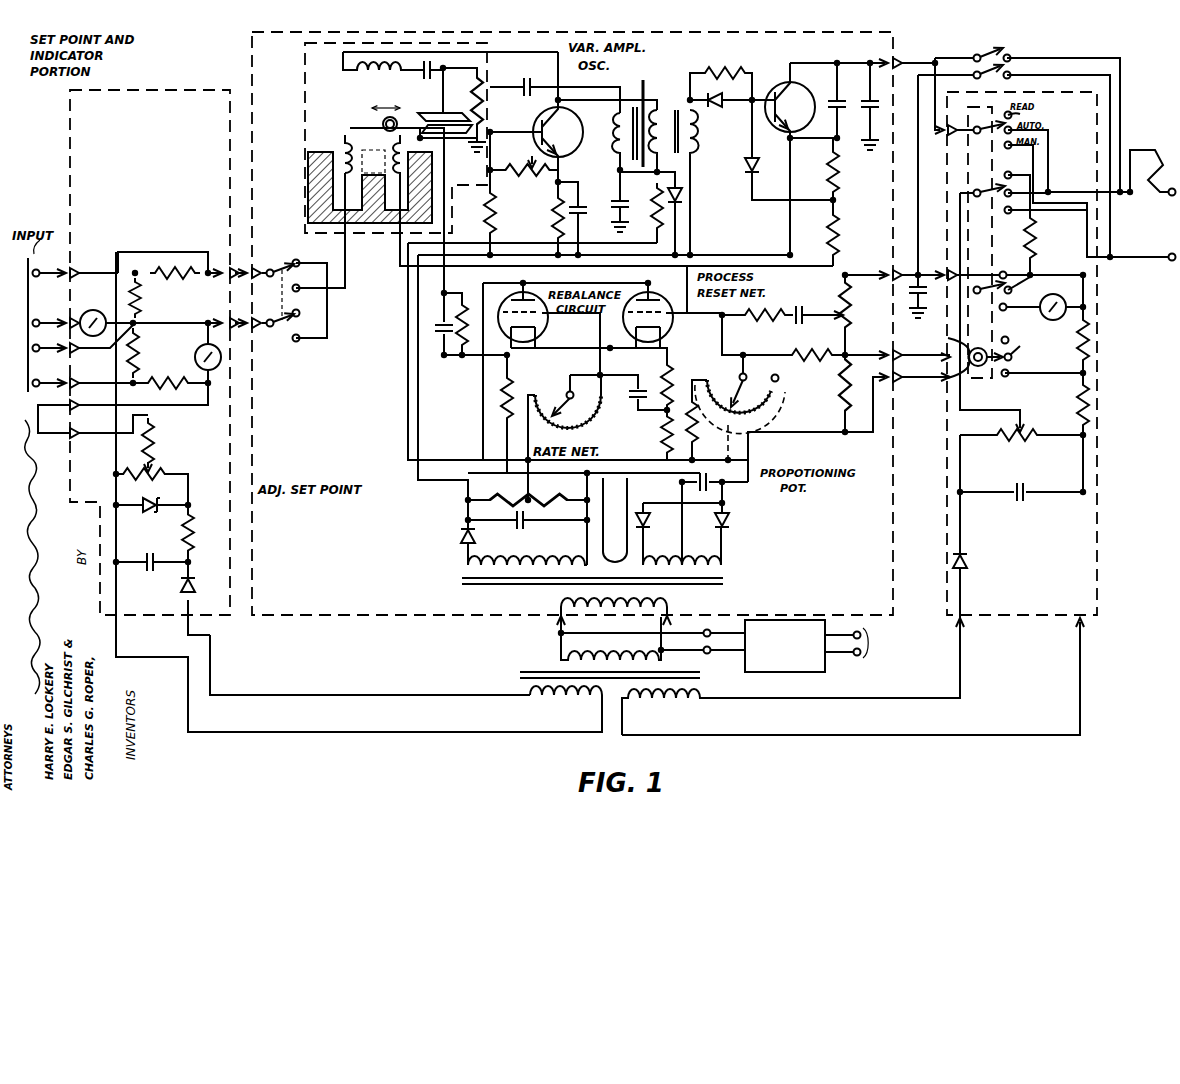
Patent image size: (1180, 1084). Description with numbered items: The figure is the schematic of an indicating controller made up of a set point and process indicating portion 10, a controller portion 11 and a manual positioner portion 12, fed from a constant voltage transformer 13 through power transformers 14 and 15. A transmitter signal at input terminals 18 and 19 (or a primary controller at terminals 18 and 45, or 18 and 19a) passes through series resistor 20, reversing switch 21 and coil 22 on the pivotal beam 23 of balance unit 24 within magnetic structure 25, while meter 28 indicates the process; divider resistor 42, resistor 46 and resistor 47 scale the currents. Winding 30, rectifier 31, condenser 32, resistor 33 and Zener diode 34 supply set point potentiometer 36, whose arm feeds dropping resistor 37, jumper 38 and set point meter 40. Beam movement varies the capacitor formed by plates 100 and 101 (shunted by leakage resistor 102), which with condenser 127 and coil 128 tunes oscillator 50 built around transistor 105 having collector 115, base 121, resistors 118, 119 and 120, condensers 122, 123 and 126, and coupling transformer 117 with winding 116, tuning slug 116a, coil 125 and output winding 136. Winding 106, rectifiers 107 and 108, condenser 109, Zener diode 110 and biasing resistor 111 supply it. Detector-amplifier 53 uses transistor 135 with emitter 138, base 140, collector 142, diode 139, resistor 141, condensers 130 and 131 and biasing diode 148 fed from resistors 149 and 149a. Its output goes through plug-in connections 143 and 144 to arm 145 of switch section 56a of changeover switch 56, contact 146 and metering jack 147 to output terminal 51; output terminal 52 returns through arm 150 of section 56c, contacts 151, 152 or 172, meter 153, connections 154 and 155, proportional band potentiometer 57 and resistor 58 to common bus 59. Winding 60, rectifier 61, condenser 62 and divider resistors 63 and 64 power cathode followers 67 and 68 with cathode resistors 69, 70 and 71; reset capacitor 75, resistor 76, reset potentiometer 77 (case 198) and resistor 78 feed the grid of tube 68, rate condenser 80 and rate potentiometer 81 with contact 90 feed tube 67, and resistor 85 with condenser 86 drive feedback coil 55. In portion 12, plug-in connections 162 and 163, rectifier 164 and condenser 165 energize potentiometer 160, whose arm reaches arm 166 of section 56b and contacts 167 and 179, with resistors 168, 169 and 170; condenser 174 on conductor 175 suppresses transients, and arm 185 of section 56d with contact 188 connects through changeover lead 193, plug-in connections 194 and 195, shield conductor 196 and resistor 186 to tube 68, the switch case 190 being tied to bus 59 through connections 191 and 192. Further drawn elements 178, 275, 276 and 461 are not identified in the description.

The set point and process indicating portion 10 is at (113, 72).
The controller portion 11 is at (356, 618).
The manual positioner portion 12 is at (1028, 616).
The constant voltage transformer 13 is at (790, 674).
The power transformer 14 is at (596, 679).
The power transformer 15 is at (610, 577).
The input terminal 18 is at (46, 263).
The input terminal 19 is at (44, 313).
The input terminal 19a is at (24, 340).
The series resistor 20 is at (175, 283).
The reversing switch 21 is at (281, 302).
The coil 22 is at (342, 138).
The pivotal beam 23 is at (384, 126).
The electromechanical balance unit 24 is at (292, 62).
The magnetic structure 25 is at (362, 224).
The direct current meter 28 is at (102, 310).
The winding 30 is at (566, 702).
The selenium rectifier 31 is at (200, 581).
The filter condenser 32 is at (152, 572).
The resistor 33 is at (176, 532).
The back connected silicon junction diode 34 is at (152, 516).
The set point adjustment potentiometer 36 is at (151, 462).
The dropping resistor 37 is at (160, 443).
The jumper connection 38 is at (40, 436).
The direct current set point meter 40 is at (195, 350).
The voltage divider resistor 42 is at (147, 298).
The input terminal 45 is at (44, 373).
The series resistor 46 is at (168, 376).
The resistor 47 is at (144, 353).
The oscillator circuit 50 is at (573, 129).
The output terminal 51 is at (1174, 189).
The output terminal 52 is at (1170, 257).
The detector-amplifier stage 53 is at (788, 150).
The feedback coil 55 is at (408, 165).
The automatic-to-manual changeover switch 56 is at (1000, 230).
The switch section 56a is at (992, 96).
The switch section 56b is at (1004, 183).
The switch section 56c is at (1020, 317).
The switch section 56d is at (1022, 348).
The proportional band potentiometer 57 is at (856, 312).
The series resistor 58 is at (829, 393).
The common bus 59 is at (530, 230).
The first winding 60 is at (514, 552).
The selenium rectifier 61 is at (462, 538).
The filter condenser 62 is at (526, 526).
The resistor 63 is at (466, 496).
The resistor 64 is at (570, 494).
The cathode follower triode 67 is at (548, 316).
The cathode follower triode 68 is at (674, 302).
The cathode resistor 69 is at (515, 412).
The resistor 70 is at (662, 430).
The resistor 71 is at (674, 383).
The reset capacitor 75 is at (826, 300).
The series resistor 76 is at (756, 322).
The reset step potentiometer 77 is at (743, 384).
The resistor 78 is at (701, 421).
The rate condenser 80 is at (631, 409).
The rate step potentiometer 81 is at (565, 398).
The resistor 85 is at (476, 284).
The condenser 86 is at (434, 324).
The contact 90 is at (564, 433).
The variable capacitor plate 100 is at (451, 145).
The fixed capacitor plate 101 is at (445, 100).
The leakage resistor 102 is at (463, 105).
The transistor 105 is at (630, 130).
The power winding 106 is at (710, 556).
The selenium rectifier 107 is at (740, 504).
The selenium rectifier 108 is at (658, 515).
The filter condenser 109 is at (722, 486).
The reverse connected silicon diode 110 is at (682, 195).
The biasing resistor 111 is at (646, 213).
The collector 115 is at (542, 120).
The winding 116 is at (668, 108).
The iron core tuning slug 116a is at (643, 84).
The coupling transformer 117 is at (524, 159).
The resistor 118 is at (539, 218).
The resistor 119 is at (479, 221).
The resistor 120 is at (524, 178).
The base 121 is at (540, 128).
The bypass condenser 122 is at (631, 201).
The condenser 123 is at (584, 217).
The coil 125 is at (607, 138).
The condenser 126 is at (545, 86).
The series condenser 127 is at (422, 76).
The coil 128 is at (355, 74).
The bypass condenser 130 is at (845, 106).
The condenser 131 is at (876, 106).
The transistor 135 is at (810, 96).
The output winding 136 is at (709, 182).
The emitter 138 is at (789, 150).
The germanium diode 139 is at (731, 109).
The base 140 is at (818, 124).
The resistor 141 is at (721, 72).
The collector 142 is at (808, 86).
The plug-in connection 143 is at (898, 62).
The plug-in connection 144 is at (940, 134).
The arm 145 is at (981, 142).
The contact 146 is at (1022, 112).
The metering jack 147 is at (1148, 160).
The biasing diode 148 is at (750, 178).
The voltage dividing resistor 149 is at (848, 236).
The voltage dividing resistor 149a is at (852, 178).
The arm 150 is at (998, 295).
The contact 151 is at (1030, 284).
The contact 152 is at (1028, 300).
The direct current meter 153 is at (1063, 298).
The plug-in connection 154 is at (932, 262).
The plug-in connection 155 is at (866, 265).
The potentiometer 160 is at (1021, 446).
The plug-in connection 162 is at (954, 618).
The plug-in connection 163 is at (1083, 620).
The selenium rectifier 164 is at (967, 562).
The filter condenser 165 is at (1026, 486).
The arm 166 is at (1026, 210).
The contact 167 is at (1003, 166).
The series resistor 168 is at (1083, 341).
The resistor 169 is at (1032, 240).
The series resistor 170 is at (1083, 405).
The contact 172 is at (1012, 273).
The condenser 174 is at (873, 295).
The conductor 175 is at (910, 286).
The conductor 178 is at (1021, 183).
The contact 179 is at (1030, 216).
The arm 185 is at (986, 368).
The resistor 186 is at (805, 346).
The contact 188 is at (1004, 376).
The dotted line 190 is at (966, 226).
The plug-in connection 191 is at (873, 367).
The plug-in connection 192 is at (936, 382).
The changeover lead 193 is at (930, 352).
The plug-in connection 194 is at (873, 342).
The plug-in connection 195 is at (932, 374).
The conductor 196 is at (952, 340).
The dotted lines 198 is at (752, 424).
The transformer terminal 275 is at (651, 629).
The transformer terminal 276 is at (696, 660).
The transformer winding 461 is at (654, 700).